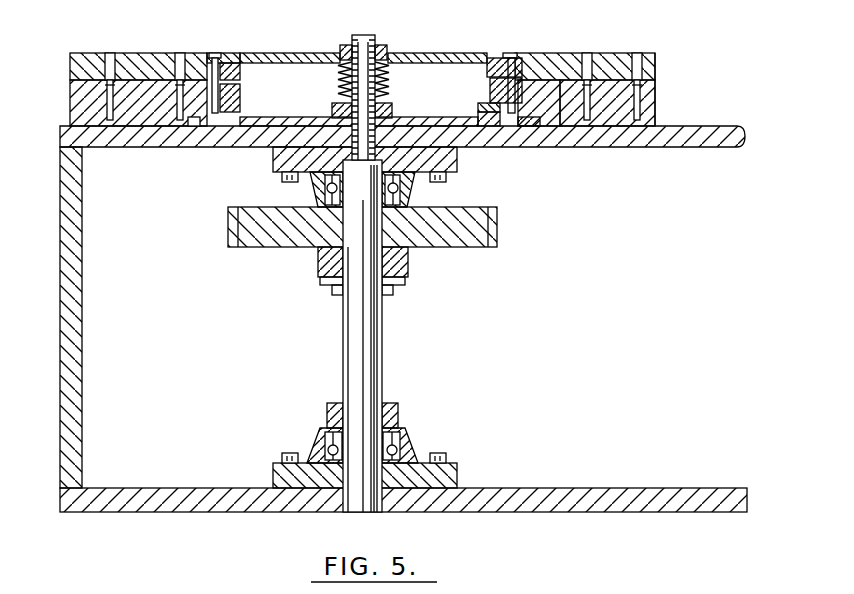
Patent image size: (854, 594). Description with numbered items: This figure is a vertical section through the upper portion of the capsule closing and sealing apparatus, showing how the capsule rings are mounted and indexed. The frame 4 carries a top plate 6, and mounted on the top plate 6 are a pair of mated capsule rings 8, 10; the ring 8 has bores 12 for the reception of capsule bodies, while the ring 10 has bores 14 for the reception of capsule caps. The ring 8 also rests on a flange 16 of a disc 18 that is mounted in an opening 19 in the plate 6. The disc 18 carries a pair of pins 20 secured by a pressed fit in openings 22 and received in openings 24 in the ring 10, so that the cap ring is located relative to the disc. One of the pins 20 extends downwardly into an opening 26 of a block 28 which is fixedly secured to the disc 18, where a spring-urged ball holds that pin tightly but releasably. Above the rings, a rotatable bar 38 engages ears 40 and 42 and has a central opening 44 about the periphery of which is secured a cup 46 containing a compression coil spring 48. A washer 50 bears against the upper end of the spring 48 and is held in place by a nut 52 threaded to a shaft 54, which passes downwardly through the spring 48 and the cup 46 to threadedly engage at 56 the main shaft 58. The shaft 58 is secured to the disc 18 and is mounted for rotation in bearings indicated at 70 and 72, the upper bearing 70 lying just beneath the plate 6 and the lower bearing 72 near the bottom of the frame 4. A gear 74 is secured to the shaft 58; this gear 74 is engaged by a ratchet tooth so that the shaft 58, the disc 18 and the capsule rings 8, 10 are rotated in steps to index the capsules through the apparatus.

The frame 4 is at (68, 338).
The top plate 6 is at (728, 126).
The capsule ring 8 is at (656, 108).
The capsule ring 10 is at (657, 67).
The bores 12 is at (637, 95).
The bores 14 is at (637, 55).
The flange 16 is at (527, 133).
The disc 18 is at (507, 133).
The opening 19 is at (192, 128).
The pins 20 is at (236, 112).
The openings 22 is at (236, 92).
The openings 24 is at (218, 57).
The opening 26 is at (521, 109).
The block 28 is at (490, 108).
The rotatable bar 38 is at (438, 53).
The ear 40 is at (243, 62).
The ear 42 is at (490, 57).
The central opening 44 is at (388, 57).
The cup 46 is at (387, 84).
The compression coil spring 48 is at (338, 77).
The washer 50 is at (345, 50).
The nut 52 is at (372, 35).
The shaft 54 is at (358, 111).
The threaded engagement 56 is at (280, 152).
The shaft 58 is at (384, 331).
The bearing 70 is at (305, 186).
The bearing 72 is at (312, 428).
The gear 74 is at (232, 236).